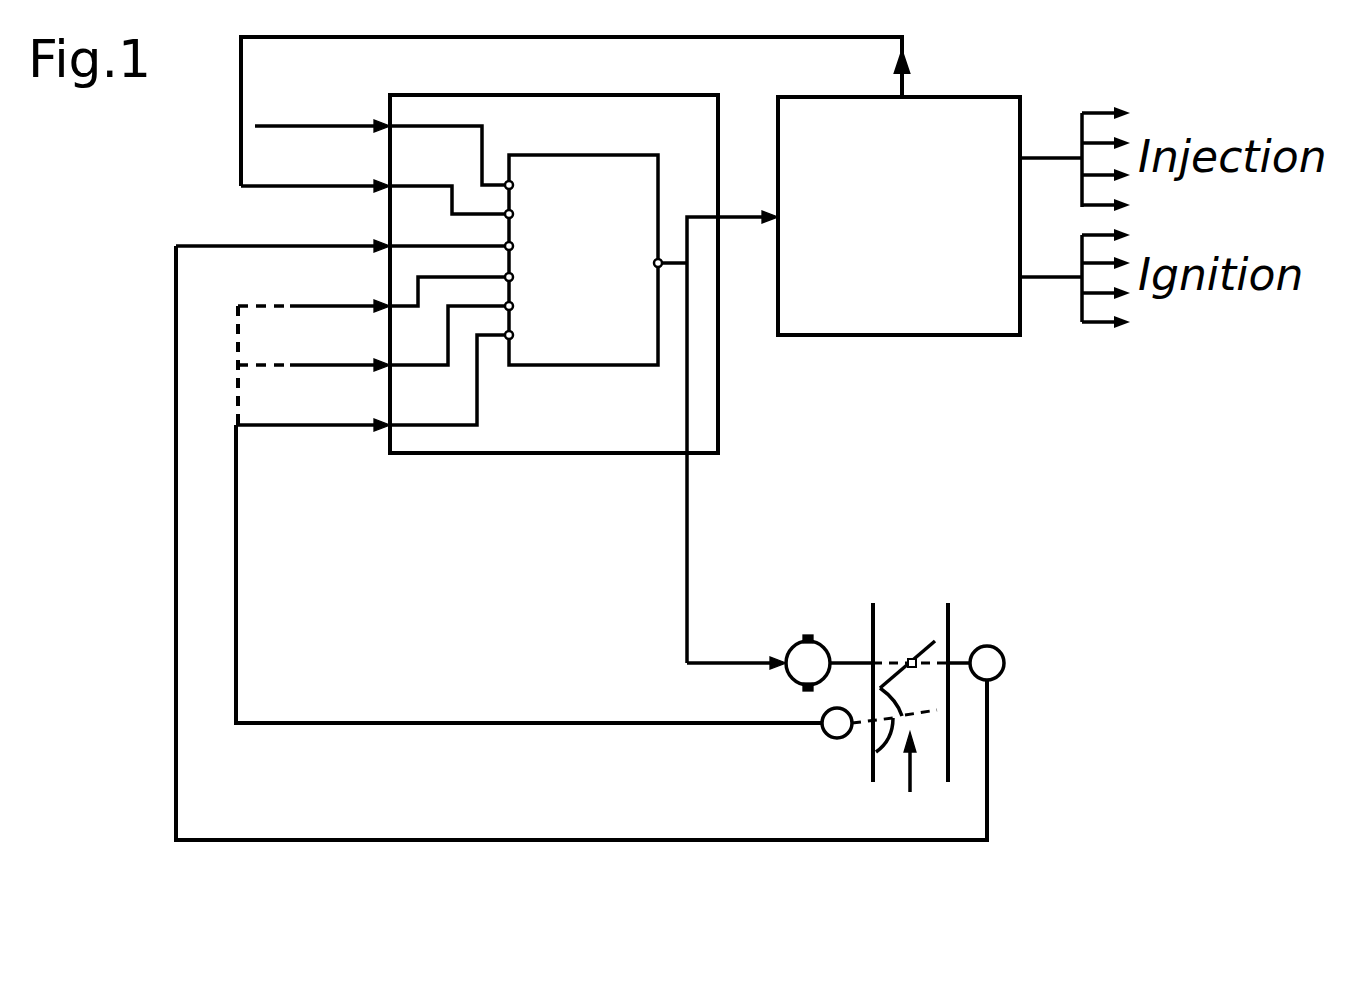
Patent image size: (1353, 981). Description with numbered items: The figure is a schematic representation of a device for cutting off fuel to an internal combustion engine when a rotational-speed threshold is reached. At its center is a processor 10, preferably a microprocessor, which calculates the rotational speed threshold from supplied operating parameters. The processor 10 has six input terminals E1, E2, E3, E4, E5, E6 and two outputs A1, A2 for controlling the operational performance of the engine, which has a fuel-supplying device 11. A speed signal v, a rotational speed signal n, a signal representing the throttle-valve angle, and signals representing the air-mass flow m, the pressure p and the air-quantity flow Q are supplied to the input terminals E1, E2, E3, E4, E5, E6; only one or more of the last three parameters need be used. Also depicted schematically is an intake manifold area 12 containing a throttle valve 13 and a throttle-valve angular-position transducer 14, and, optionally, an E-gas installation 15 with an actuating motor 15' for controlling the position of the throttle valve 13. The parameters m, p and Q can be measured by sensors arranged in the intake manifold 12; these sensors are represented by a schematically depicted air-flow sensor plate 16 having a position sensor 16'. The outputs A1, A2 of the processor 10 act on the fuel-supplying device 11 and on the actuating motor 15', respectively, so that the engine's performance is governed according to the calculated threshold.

The processor 10 is at (578, 440).
The fuel-supplying device 11 is at (957, 318).
The intake manifold area 12 is at (952, 630).
The throttle valve 13 is at (925, 652).
The throttle-valve angular-position transducer 14 is at (1003, 650).
The E-gas installation 15 is at (876, 611).
The actuating motor 15' is at (786, 625).
The air-flow sensor plate 16 is at (849, 762).
The position sensor 16' is at (818, 757).
The input terminal E1 is at (386, 118).
The input terminal E2 is at (386, 180).
The input terminal E3 is at (386, 240).
The input terminal E4 is at (386, 300).
The input terminal E5 is at (386, 359).
The input terminal E6 is at (386, 419).
The output A1 is at (721, 215).
The output A2 is at (690, 458).